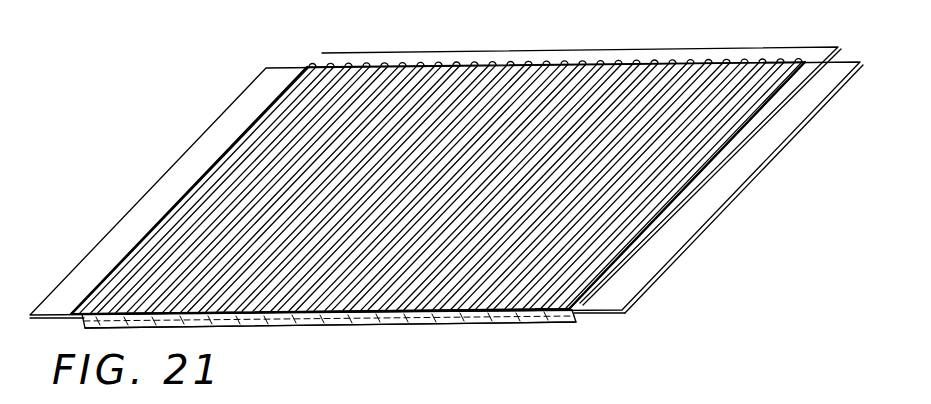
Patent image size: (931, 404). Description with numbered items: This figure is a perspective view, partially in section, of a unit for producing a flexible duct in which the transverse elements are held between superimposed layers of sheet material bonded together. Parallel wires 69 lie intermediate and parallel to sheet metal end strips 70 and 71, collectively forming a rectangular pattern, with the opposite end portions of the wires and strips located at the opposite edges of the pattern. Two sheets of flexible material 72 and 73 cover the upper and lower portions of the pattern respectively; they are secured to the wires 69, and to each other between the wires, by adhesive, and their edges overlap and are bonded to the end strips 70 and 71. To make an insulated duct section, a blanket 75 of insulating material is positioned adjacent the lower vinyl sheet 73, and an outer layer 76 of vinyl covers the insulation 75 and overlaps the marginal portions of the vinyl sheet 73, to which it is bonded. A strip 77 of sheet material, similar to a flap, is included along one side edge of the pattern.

The sheet metal end strip 70 is at (125, 216).
The sheet metal end strip 71 is at (706, 216).
The sheet of flexible material 72 is at (445, 70).
The strip of sheet material 77 is at (670, 55).
The sheet of flexible material 73 is at (365, 312).
The blanket of insulating material 75 is at (403, 314).
The outer layer of vinyl 76 is at (473, 323).
The parallel wires 69 is at (286, 312).